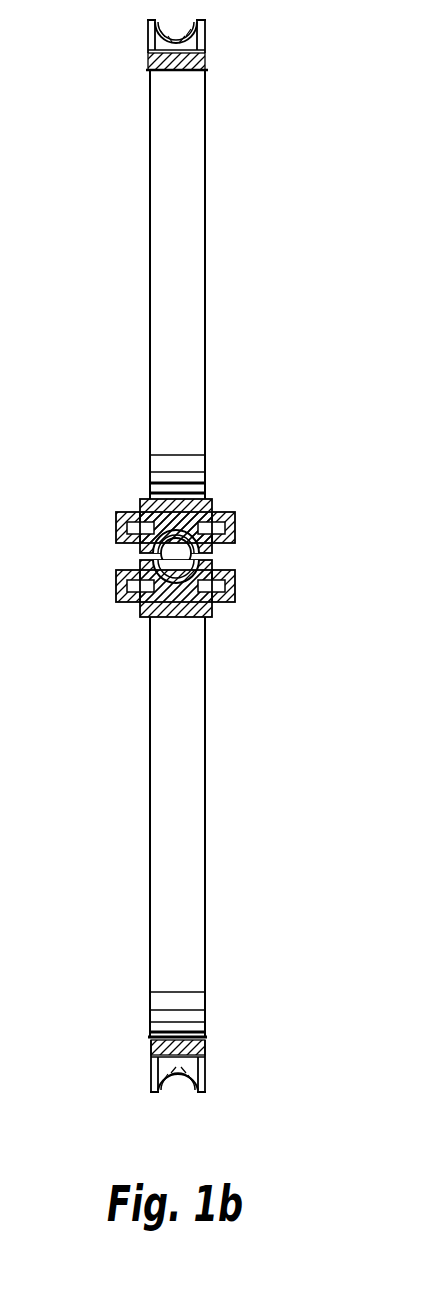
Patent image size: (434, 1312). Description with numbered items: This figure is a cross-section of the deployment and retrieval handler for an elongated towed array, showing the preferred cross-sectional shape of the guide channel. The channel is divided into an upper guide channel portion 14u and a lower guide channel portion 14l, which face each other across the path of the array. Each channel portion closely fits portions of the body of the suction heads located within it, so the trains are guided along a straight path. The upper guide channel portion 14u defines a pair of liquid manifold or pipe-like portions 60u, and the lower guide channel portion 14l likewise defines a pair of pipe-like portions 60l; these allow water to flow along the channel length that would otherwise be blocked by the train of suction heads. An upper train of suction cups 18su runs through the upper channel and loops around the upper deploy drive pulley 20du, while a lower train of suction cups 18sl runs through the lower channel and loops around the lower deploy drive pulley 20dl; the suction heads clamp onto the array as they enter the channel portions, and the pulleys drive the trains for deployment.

The upper train suction cup 18su is at (205, 33).
The upper deploy drive pulley 20du is at (205, 197).
The upper pipe-like portion 60u is at (116, 526).
The upper guide channel portion 14u is at (175, 533).
The lower pipe-like portion 60l is at (116, 582).
The lower guide channel portion 14l is at (175, 588).
The lower deploy drive pulley 20dl is at (205, 812).
The lower train suction cup 18sl is at (205, 1052).